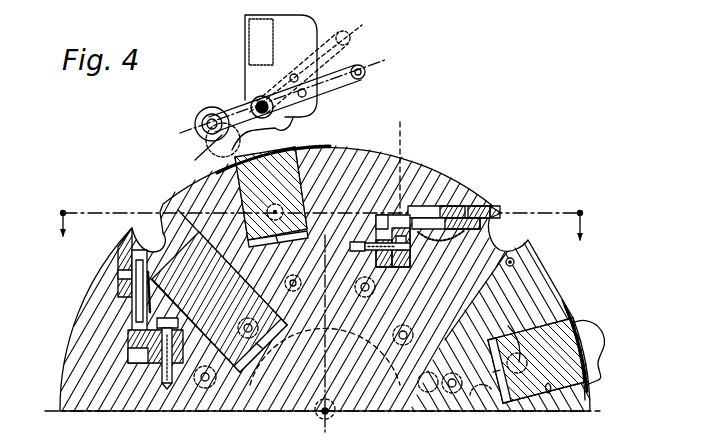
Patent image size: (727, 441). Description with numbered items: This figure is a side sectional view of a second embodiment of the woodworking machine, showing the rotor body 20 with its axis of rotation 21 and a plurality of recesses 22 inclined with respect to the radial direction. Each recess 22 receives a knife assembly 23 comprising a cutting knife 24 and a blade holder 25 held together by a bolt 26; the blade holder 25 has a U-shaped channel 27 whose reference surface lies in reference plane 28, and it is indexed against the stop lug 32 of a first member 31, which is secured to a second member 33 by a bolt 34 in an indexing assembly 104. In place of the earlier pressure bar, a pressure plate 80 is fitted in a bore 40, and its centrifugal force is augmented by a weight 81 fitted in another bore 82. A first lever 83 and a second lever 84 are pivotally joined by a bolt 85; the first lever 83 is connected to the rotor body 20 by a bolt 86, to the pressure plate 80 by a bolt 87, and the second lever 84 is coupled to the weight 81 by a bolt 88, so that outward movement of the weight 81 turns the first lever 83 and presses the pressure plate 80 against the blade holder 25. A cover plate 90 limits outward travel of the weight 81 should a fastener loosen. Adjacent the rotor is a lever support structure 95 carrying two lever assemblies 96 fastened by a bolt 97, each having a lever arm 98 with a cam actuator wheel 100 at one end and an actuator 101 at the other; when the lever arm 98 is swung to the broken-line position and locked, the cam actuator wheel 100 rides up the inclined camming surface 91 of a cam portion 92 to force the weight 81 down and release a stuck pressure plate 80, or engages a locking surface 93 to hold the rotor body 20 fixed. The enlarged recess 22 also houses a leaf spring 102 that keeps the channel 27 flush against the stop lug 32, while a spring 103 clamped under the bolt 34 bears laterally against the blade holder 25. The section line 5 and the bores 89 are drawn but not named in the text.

The section line V-V 5 is at (323, 214).
The rotor body 20 is at (322, 333).
The axis of rotation 21 is at (327, 410).
The recess 22 is at (423, 207).
The knife assembly 23 is at (501, 209).
The cutting knife 24 is at (502, 213).
The blade holder 25 is at (470, 226).
The bolt 26 is at (457, 212).
The U-shaped channel 27 is at (130, 338).
The reference plane 28 is at (128, 338).
The first member 31 is at (403, 267).
The stop lug 32 is at (132, 345).
The second member 33 is at (384, 267).
The bolt 34 is at (369, 243).
The bore 40 is at (196, 240).
The pressure plate 80 is at (367, 275).
The weight 81 is at (368, 275).
The bore 82 is at (562, 399).
The first lever 83 is at (443, 385).
The second lever 84 is at (488, 384).
The bolt 85 is at (451, 378).
The bolt 86 is at (358, 291).
The bolt 87 is at (413, 329).
The bolt 88 is at (511, 338).
The bores 89 is at (247, 331).
The cover plate 90 is at (564, 293).
The inclined camming surface 91 is at (586, 312).
The cam portion 92 is at (584, 340).
The locking surface 93 is at (597, 362).
The lever support structure 95 is at (252, 77).
The lever assembly 96 is at (236, 99).
The bolt 97 is at (293, 122).
The lever arm 98 is at (292, 78).
The cam actuator wheel 100 is at (197, 125).
The actuator 101 is at (366, 72).
The leaf spring 102 is at (380, 208).
The spring 103 is at (437, 250).
The indexing assembly 104 is at (364, 259).